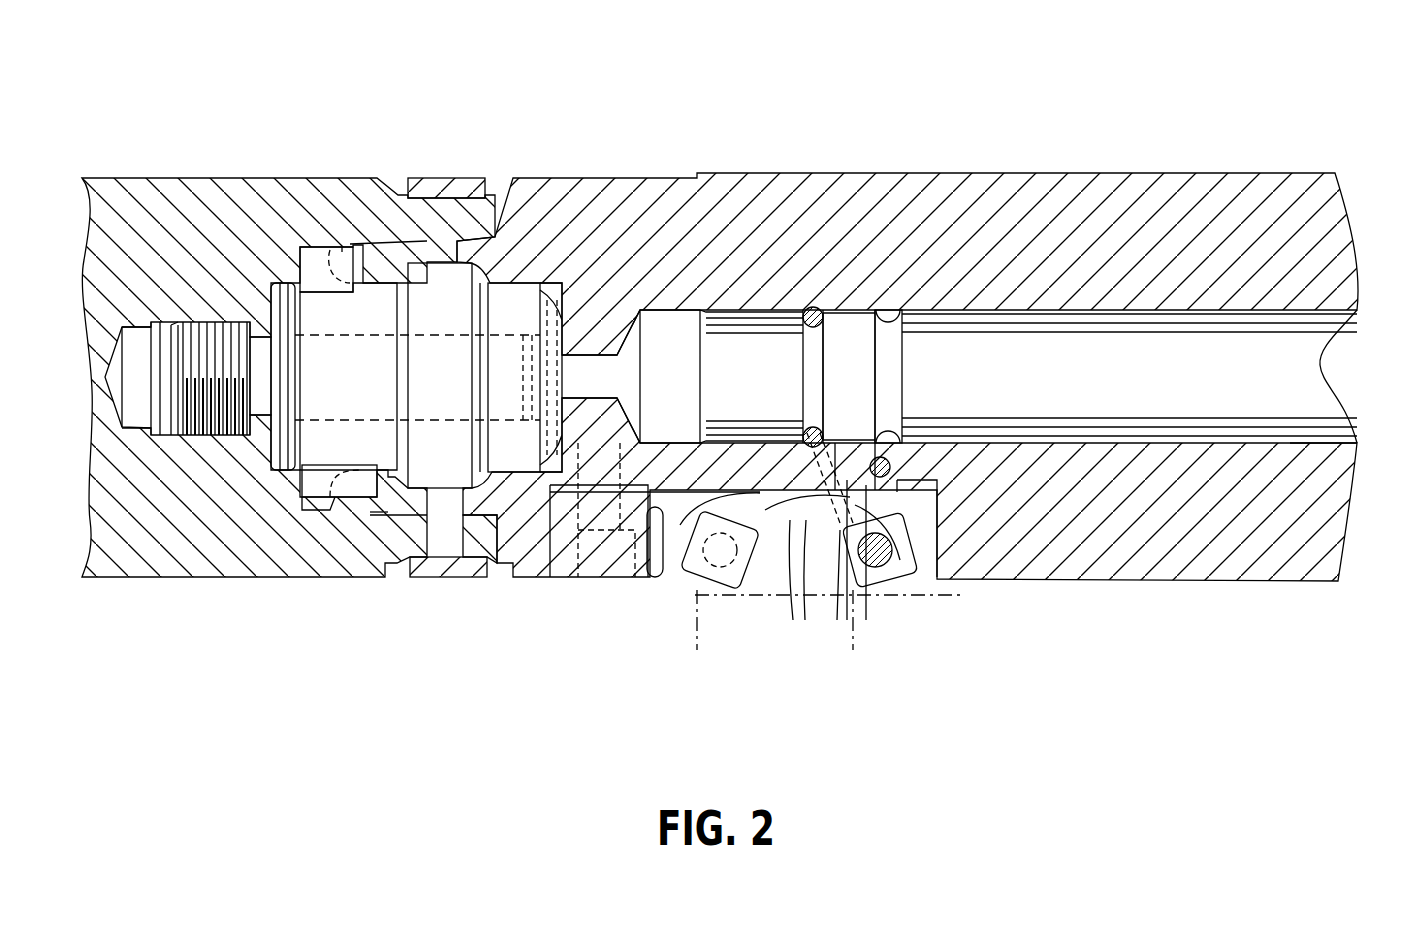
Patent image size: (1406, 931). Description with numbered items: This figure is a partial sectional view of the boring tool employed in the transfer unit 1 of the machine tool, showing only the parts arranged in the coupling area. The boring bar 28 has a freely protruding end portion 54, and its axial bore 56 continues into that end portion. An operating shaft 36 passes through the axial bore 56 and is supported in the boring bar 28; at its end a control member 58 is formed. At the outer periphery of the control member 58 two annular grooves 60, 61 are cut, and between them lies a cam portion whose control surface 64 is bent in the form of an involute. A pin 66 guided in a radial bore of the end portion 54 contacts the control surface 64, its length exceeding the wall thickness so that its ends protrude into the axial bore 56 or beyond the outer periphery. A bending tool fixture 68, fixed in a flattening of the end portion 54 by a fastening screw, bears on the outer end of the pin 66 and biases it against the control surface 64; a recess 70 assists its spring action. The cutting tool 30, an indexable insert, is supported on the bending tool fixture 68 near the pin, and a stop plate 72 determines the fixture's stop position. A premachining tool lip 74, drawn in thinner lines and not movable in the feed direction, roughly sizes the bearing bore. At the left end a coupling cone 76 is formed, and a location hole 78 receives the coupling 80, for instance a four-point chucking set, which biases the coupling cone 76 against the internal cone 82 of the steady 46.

The transfer unit 1 is at (1303, 85).
The boring bar 28 is at (1093, 165).
The cutting tool 30 is at (862, 590).
The operating shaft 36 is at (1237, 340).
The steady 46 is at (193, 205).
The end portion 54 is at (657, 210).
The axial bore 56 is at (1293, 440).
The control member 58 is at (753, 325).
The annular groove 60 is at (803, 340).
The annular groove 61 is at (888, 320).
The control surface 64 is at (849, 335).
The pin 66 is at (845, 478).
The bending tool fixture 68 is at (790, 560).
The recess 70 is at (655, 535).
The stop plate 72 is at (990, 590).
The premachining tool lip 74 is at (705, 590).
The coupling cone 76 is at (390, 205).
The location hole 78 is at (516, 290).
The coupling 80 is at (445, 287).
The internal cone 82 is at (403, 500).